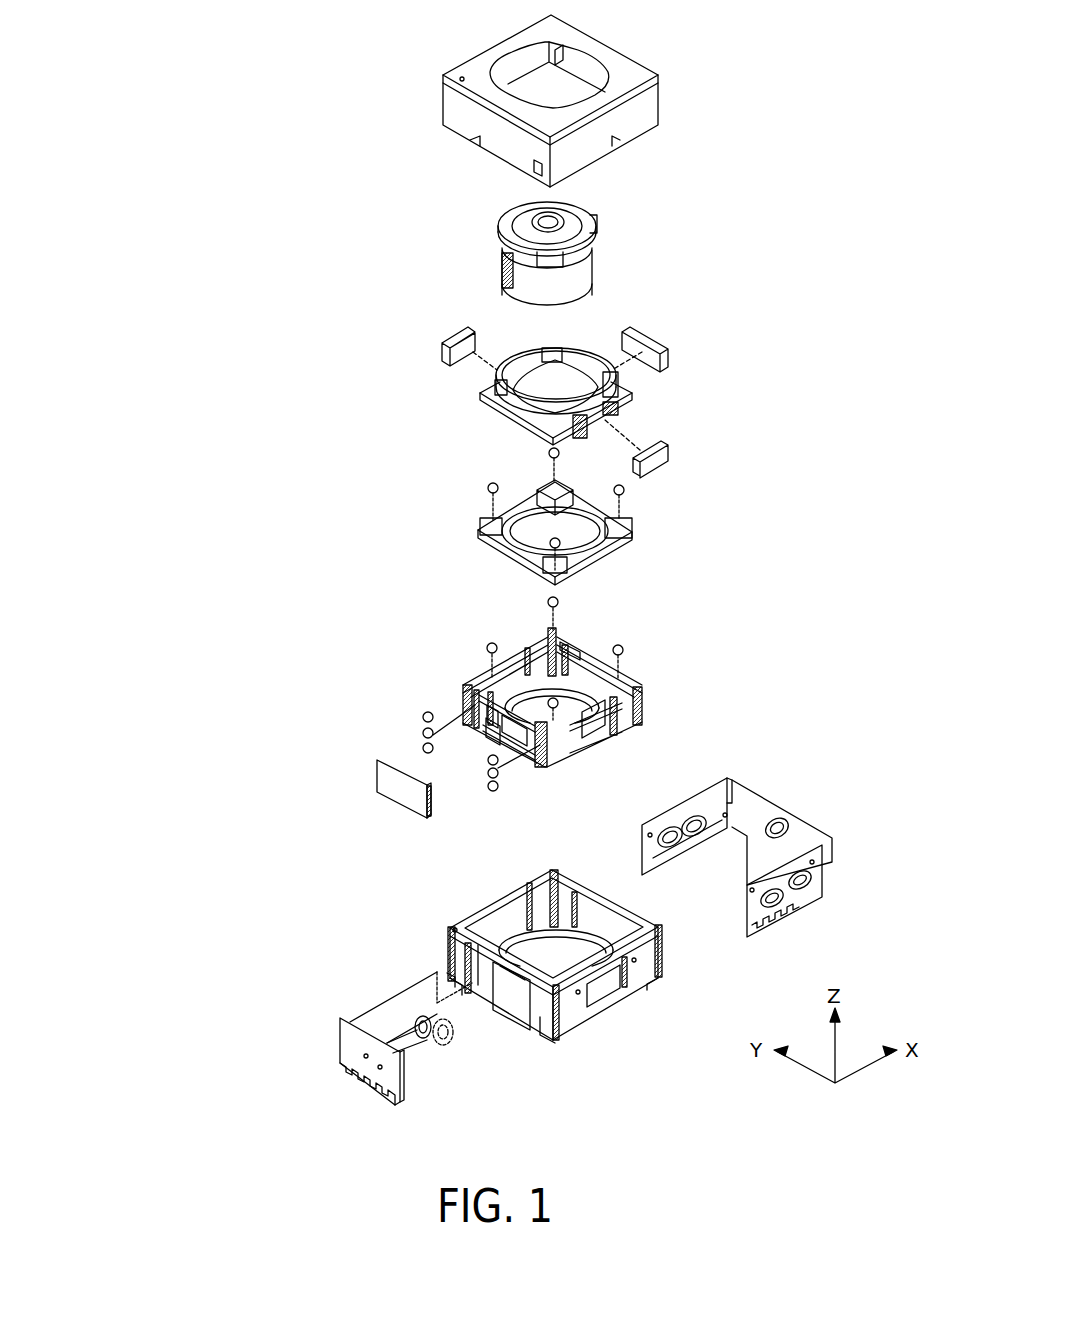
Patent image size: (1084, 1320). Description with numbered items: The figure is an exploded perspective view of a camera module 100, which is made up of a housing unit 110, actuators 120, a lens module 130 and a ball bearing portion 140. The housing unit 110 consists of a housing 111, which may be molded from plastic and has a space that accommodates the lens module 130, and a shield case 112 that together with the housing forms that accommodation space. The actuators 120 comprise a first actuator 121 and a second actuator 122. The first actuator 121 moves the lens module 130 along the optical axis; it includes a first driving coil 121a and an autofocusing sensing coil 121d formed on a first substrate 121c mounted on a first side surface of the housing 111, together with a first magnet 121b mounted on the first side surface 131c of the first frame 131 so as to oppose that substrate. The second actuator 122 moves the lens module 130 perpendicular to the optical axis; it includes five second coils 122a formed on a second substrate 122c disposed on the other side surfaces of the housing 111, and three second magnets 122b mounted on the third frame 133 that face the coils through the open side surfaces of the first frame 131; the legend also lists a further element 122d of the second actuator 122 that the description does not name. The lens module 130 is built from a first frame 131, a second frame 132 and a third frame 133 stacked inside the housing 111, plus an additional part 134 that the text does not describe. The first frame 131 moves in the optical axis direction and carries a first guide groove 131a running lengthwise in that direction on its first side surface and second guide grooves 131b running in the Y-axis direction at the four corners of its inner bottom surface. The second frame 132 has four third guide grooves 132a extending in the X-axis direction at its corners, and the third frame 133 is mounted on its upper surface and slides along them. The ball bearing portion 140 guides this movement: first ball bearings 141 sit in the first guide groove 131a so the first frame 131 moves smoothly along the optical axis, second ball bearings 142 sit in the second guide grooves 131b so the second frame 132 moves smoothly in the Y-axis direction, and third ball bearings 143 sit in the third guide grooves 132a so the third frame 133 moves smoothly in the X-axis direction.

The camera module 100 is at (858, 214).
The housing unit 110 is at (163, 30).
The housing 111 is at (583, 1015).
The shield case 112 is at (462, 108).
The actuators 120 is at (230, 178).
The first actuator 121 is at (163, 135).
The first driving coil 121a is at (507, 1085).
The first magnet 121b is at (410, 800).
The first substrate 121c is at (340, 1038).
The autofocusing (AF) sensing coil 121d is at (417, 1020).
The second actuator 122 is at (163, 278).
The second coils 122a is at (163, 578).
The second magnets 122b is at (697, 308).
The second substrate 122c is at (697, 962).
The yoke 122d is at (123, 384).
The lens module 130 is at (163, 630).
The first frame 131 is at (724, 670).
The first guide groove 131a is at (548, 775).
The second guide grooves 131b is at (575, 640).
The first side surface 131c is at (520, 738).
The second frame 132 is at (697, 560).
The third guide grooves 132a is at (625, 525).
The third frame 133 is at (507, 405).
The lens barrel 134 is at (502, 276).
The ball bearing portion 140 is at (163, 790).
The first ball bearings 141 is at (424, 717).
The second ball bearings 142 is at (492, 642).
The third ball bearings 143 is at (490, 484).